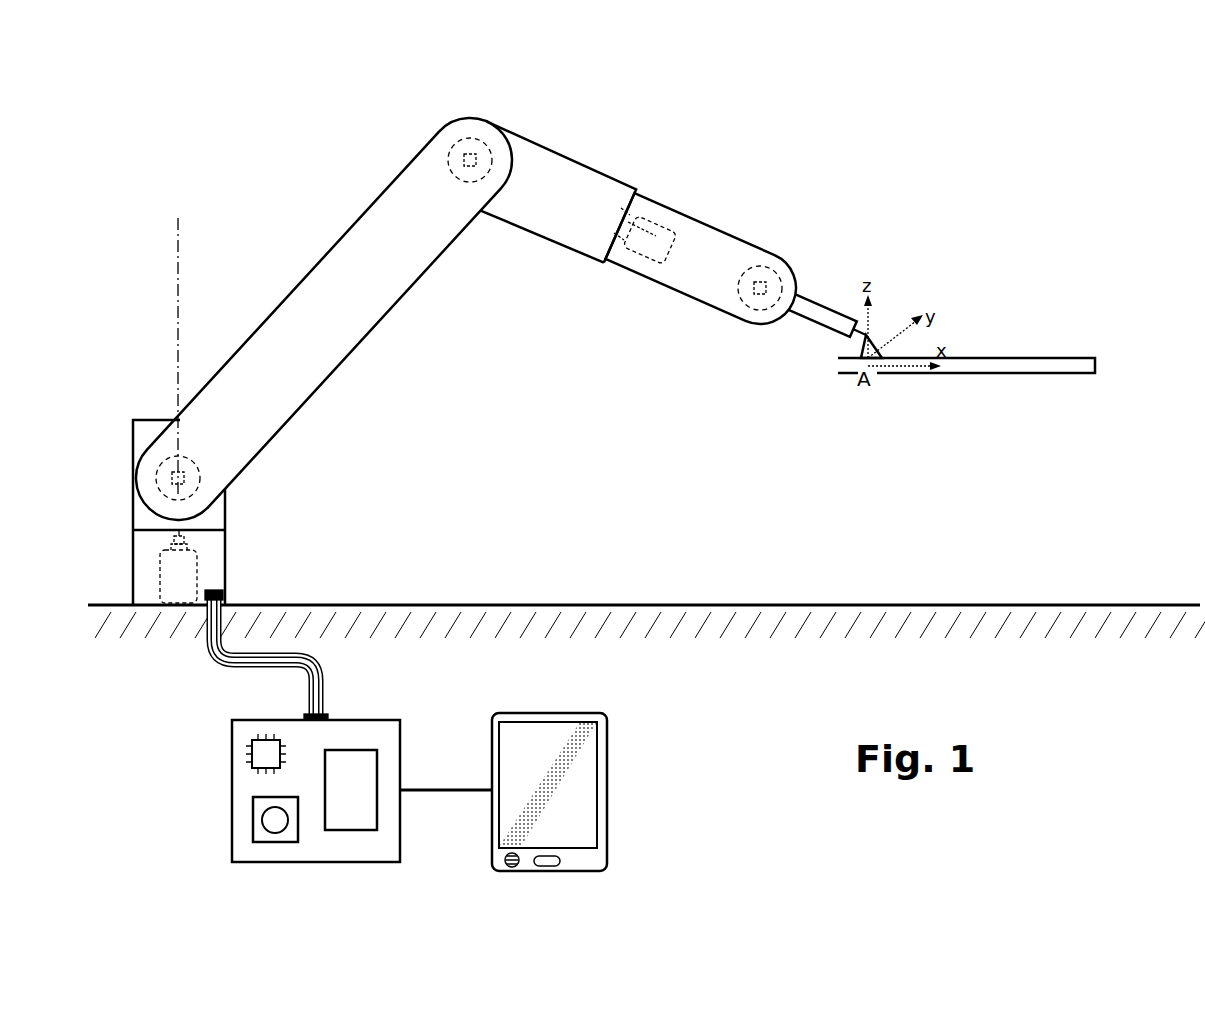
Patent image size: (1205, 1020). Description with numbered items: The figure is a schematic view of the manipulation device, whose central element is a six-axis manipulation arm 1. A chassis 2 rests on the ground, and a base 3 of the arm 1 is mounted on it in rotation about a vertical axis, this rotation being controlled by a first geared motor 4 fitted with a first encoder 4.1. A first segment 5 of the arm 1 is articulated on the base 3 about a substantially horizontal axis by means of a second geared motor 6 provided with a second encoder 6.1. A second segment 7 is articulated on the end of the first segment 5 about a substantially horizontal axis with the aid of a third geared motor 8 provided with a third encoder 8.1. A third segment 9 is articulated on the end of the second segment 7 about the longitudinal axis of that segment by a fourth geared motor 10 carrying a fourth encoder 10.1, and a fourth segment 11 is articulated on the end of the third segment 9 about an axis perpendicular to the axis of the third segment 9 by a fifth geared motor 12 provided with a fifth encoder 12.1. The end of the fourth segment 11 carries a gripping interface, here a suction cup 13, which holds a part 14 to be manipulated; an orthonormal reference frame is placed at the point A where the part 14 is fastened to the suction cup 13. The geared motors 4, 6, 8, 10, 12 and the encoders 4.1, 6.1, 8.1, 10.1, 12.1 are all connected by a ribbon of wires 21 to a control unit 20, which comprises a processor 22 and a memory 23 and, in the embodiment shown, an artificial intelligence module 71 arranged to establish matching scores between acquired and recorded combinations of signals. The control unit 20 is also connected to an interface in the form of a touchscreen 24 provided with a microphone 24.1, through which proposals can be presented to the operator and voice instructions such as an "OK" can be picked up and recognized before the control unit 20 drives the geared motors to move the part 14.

The manipulation arm 1 is at (703, 104).
The chassis 2 is at (230, 577).
The base 3 is at (232, 513).
The first geared motor 4 is at (160, 575).
The first encoder 4.1 is at (170, 545).
The first segment 5 is at (305, 318).
The second geared motor 6 is at (133, 476).
The second encoder 6.1 is at (216, 482).
The second segment 7 is at (566, 170).
The third geared motor 8 is at (443, 138).
The third encoder 8.1 is at (465, 138).
The third segment 9 is at (682, 280).
The fourth geared motor 10 is at (666, 210).
The fourth encoder 10.1 is at (646, 205).
The fourth segment 11 is at (818, 302).
The fifth geared motor 12 is at (770, 256).
The fifth encoder 12.1 is at (746, 306).
The suction cup 13 is at (858, 342).
The part 14 is at (985, 375).
The control unit 20 is at (385, 720).
The ribbon of wires 21 is at (305, 694).
The processor 22 is at (250, 768).
The memory 23 is at (252, 818).
The touchscreen 24 is at (590, 758).
The microphone 24.1 is at (506, 862).
The artificial intelligence module 71 is at (380, 810).